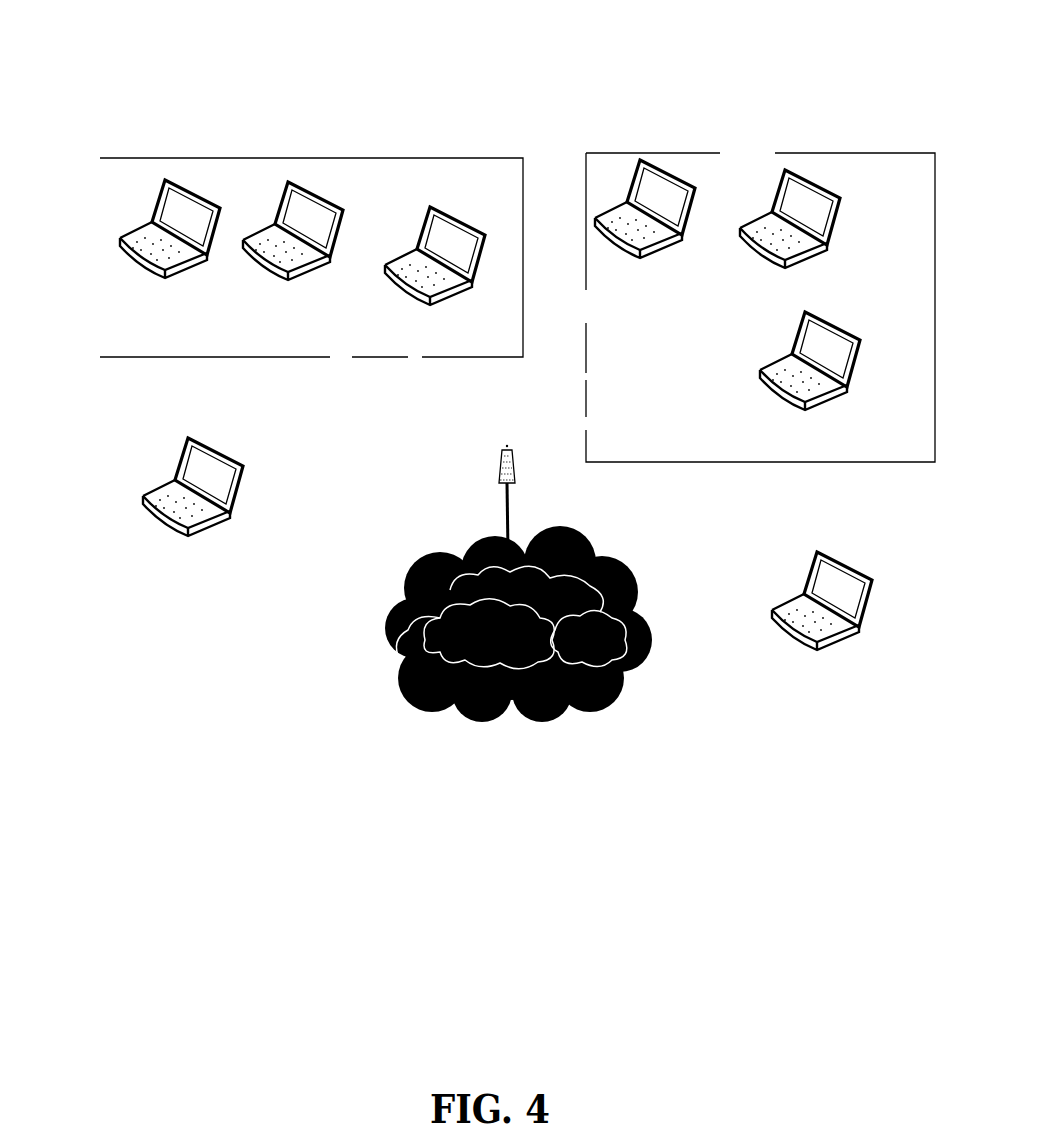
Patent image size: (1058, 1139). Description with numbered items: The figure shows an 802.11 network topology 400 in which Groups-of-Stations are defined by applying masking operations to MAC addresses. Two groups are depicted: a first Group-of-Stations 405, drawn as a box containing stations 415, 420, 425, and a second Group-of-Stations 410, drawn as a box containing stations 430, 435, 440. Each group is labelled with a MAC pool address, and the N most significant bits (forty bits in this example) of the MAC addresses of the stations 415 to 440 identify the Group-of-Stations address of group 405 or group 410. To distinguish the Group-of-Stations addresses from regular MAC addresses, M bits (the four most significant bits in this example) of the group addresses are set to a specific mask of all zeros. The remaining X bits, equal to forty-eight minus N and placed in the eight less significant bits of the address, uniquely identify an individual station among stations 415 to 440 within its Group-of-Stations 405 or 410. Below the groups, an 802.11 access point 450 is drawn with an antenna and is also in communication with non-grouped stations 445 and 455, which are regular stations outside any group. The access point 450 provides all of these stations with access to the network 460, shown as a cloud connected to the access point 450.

The 802.11 network topology 400 is at (508, 47).
The Group-of-Stations (group 1) 405 is at (340, 143).
The Group-of-Stations (group 2) 410 is at (908, 142).
The station 415 is at (183, 285).
The station 420 is at (305, 285).
The station 425 is at (453, 210).
The station 430 is at (680, 172).
The station 435 is at (825, 192).
The station 440 is at (823, 417).
The non-grouped station 445 is at (162, 547).
The access point 450 is at (435, 488).
The non-grouped station 455 is at (782, 670).
The network 460 is at (435, 702).